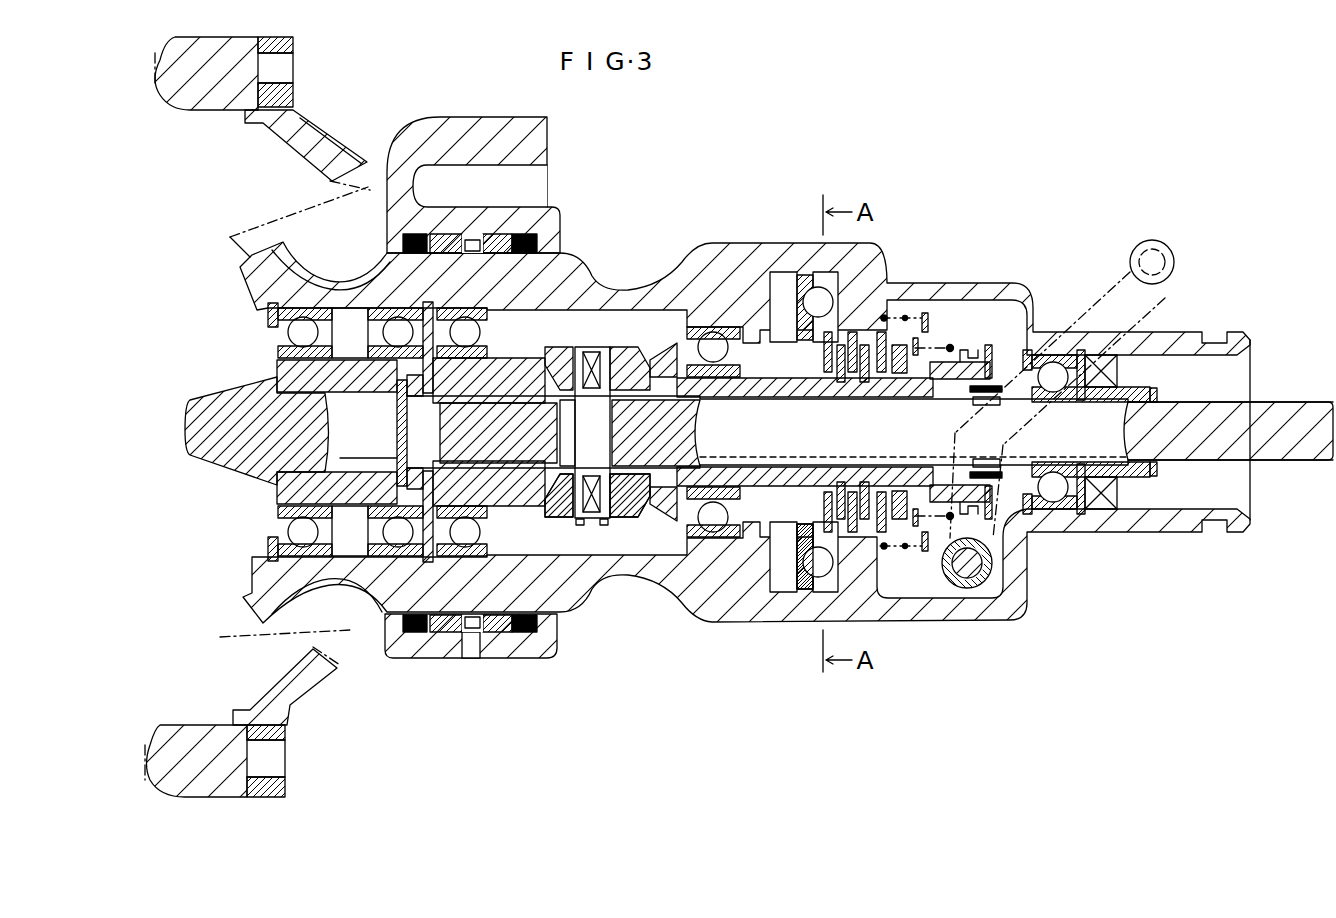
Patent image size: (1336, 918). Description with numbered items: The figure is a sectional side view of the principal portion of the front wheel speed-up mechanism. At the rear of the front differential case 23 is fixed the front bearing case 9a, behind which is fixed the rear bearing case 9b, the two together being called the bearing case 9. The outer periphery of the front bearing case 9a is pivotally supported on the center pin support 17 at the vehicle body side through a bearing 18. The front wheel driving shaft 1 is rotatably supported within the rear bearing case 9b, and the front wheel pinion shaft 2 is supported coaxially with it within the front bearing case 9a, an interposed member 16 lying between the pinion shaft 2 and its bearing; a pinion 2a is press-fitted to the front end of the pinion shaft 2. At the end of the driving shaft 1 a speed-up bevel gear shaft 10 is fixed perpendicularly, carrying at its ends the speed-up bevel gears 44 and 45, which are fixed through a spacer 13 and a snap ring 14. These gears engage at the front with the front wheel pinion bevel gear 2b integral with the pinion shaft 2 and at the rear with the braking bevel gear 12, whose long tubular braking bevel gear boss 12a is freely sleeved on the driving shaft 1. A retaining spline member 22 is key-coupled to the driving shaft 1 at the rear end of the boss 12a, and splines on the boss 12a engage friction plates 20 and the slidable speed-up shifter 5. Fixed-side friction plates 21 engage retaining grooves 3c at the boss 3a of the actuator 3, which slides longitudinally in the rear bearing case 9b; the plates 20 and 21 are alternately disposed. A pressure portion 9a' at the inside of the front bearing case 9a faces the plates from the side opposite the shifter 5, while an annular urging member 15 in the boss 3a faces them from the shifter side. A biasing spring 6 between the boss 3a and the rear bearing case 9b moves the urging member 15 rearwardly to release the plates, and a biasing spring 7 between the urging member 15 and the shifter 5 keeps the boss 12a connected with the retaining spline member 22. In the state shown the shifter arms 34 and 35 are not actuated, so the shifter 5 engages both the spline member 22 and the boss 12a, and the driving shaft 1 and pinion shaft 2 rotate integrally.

The front wheel driving shaft 1 is at (1274, 446).
The front wheel pinion shaft 2 is at (356, 449).
The pinion 2a is at (236, 478).
The front wheel pinion bevel gear 2b is at (512, 358).
The actuator 3 is at (800, 272).
The boss 3a is at (893, 540).
The retaining grooves 3c is at (932, 318).
The speed-up shifter 5 is at (985, 360).
The biasing spring 6 is at (905, 314).
The biasing spring 7 is at (950, 346).
The bearing case 9 is at (806, 185).
The front bearing case 9a is at (740, 367).
The pressure portion 9a' is at (805, 400).
The rear bearing case 9b is at (1055, 332).
The speed-up bevel gear shaft 10 is at (600, 431).
The braking bevel gear 12 is at (665, 362).
The braking bevel gear boss 12a is at (725, 400).
The spacer 13 is at (548, 519).
The snap ring 14 is at (582, 528).
The urging member 15 is at (910, 382).
The interposed member 16 is at (347, 360).
The center pin support 17 is at (455, 660).
The bearing 18 is at (440, 620).
The friction plates 20 is at (842, 385).
The friction plates 21 is at (866, 335).
The retaining spline member 22 is at (980, 475).
The front differential case 23 is at (232, 100).
The shifter arm 34 is at (1118, 272).
The shifter arm 35 is at (966, 420).
The speed-up bevel gear 44 is at (562, 350).
The speed-up bevel gear 45 is at (628, 518).